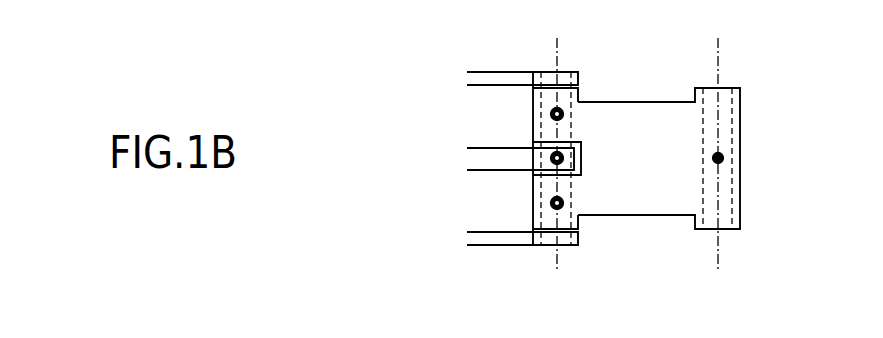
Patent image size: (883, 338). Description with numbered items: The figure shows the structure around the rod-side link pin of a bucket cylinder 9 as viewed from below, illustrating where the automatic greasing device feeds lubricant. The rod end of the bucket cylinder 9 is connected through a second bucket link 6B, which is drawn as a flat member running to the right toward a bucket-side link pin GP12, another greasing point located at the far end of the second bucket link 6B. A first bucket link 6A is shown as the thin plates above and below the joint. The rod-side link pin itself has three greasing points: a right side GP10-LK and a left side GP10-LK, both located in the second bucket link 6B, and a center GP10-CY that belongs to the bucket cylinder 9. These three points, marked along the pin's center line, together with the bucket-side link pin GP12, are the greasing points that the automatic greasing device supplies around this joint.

The first bucket link 6A is at (548, 79).
The second bucket link 6B is at (632, 128).
The bucket cylinder 9 is at (512, 158).
The right side and left side greasing points of the rod-side link pin GP10-LK is at (549, 114).
The center greasing point of the rod-side link pin GP10-CY is at (549, 159).
The bucket-side link pin GP12 is at (722, 160).